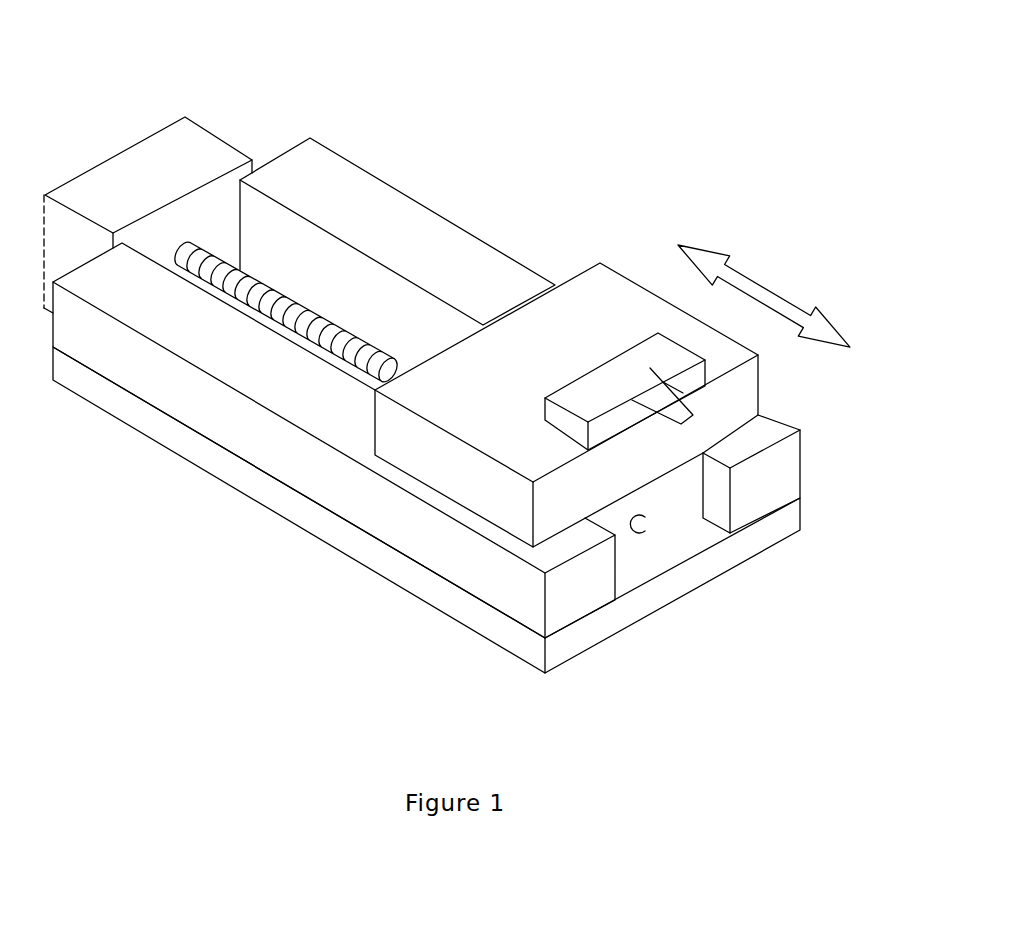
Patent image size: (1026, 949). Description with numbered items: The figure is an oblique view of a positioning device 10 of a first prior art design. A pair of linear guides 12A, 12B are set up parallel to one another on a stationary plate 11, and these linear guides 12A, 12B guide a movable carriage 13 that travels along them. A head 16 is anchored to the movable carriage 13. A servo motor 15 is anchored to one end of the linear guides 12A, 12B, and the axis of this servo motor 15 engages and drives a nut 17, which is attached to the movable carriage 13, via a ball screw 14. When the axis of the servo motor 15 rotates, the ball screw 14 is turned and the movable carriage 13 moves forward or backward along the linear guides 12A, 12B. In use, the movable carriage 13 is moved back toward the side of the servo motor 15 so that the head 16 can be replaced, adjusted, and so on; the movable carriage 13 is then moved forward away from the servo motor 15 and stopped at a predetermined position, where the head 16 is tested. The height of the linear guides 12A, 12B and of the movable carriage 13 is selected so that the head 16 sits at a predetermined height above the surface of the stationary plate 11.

The positioning device 10 is at (307, 47).
The stationary plate 11 is at (130, 408).
The linear guide 12A is at (365, 527).
The linear guide 12B is at (375, 222).
The movable carriage 13 is at (600, 322).
The ball screw 14 is at (345, 333).
The servo motor 15 is at (133, 187).
The head 16 is at (697, 393).
The nut 17 is at (638, 535).